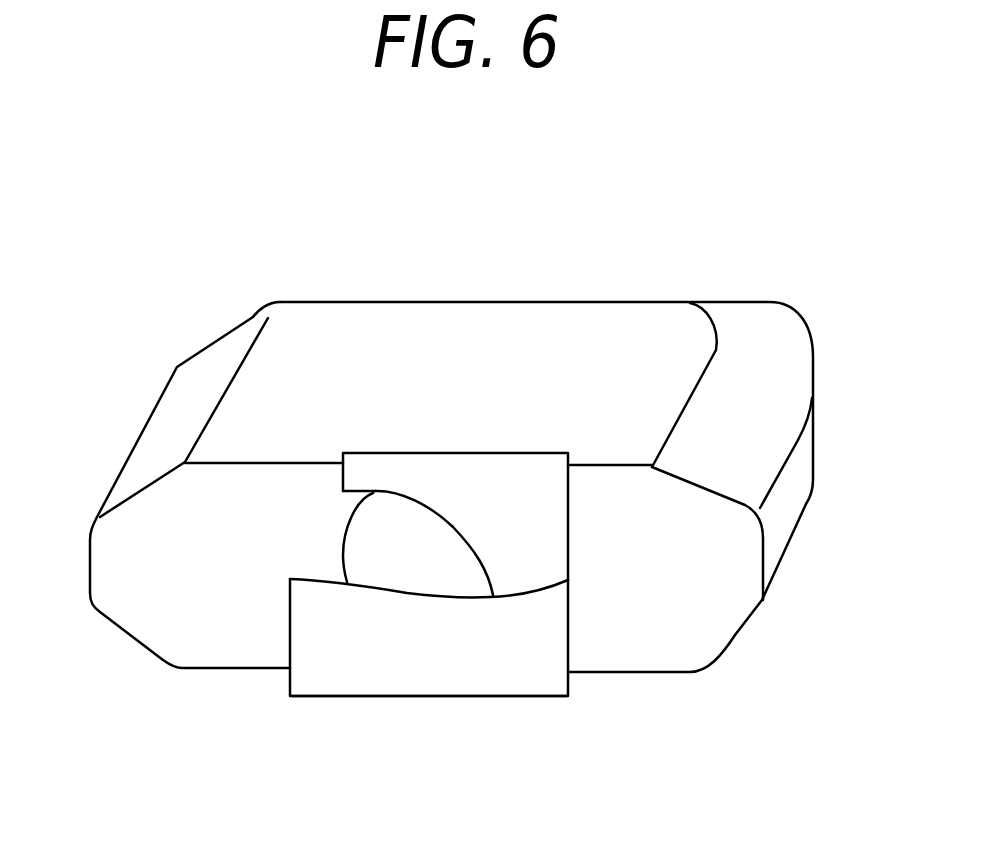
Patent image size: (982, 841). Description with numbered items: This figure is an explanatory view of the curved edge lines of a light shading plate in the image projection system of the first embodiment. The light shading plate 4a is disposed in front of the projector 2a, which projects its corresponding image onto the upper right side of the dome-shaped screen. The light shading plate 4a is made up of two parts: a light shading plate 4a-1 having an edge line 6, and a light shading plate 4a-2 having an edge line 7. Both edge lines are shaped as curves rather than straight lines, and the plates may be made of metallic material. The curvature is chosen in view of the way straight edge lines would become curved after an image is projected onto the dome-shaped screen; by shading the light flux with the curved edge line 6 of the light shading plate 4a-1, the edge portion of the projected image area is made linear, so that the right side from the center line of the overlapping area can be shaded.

The projector 2a is at (183, 493).
The light shading plate 4a is at (543, 617).
The light shading plate 4a-1 is at (518, 492).
The light shading plate 4a-2 is at (457, 680).
The edge line 6 is at (450, 520).
The edge line 7 is at (402, 593).